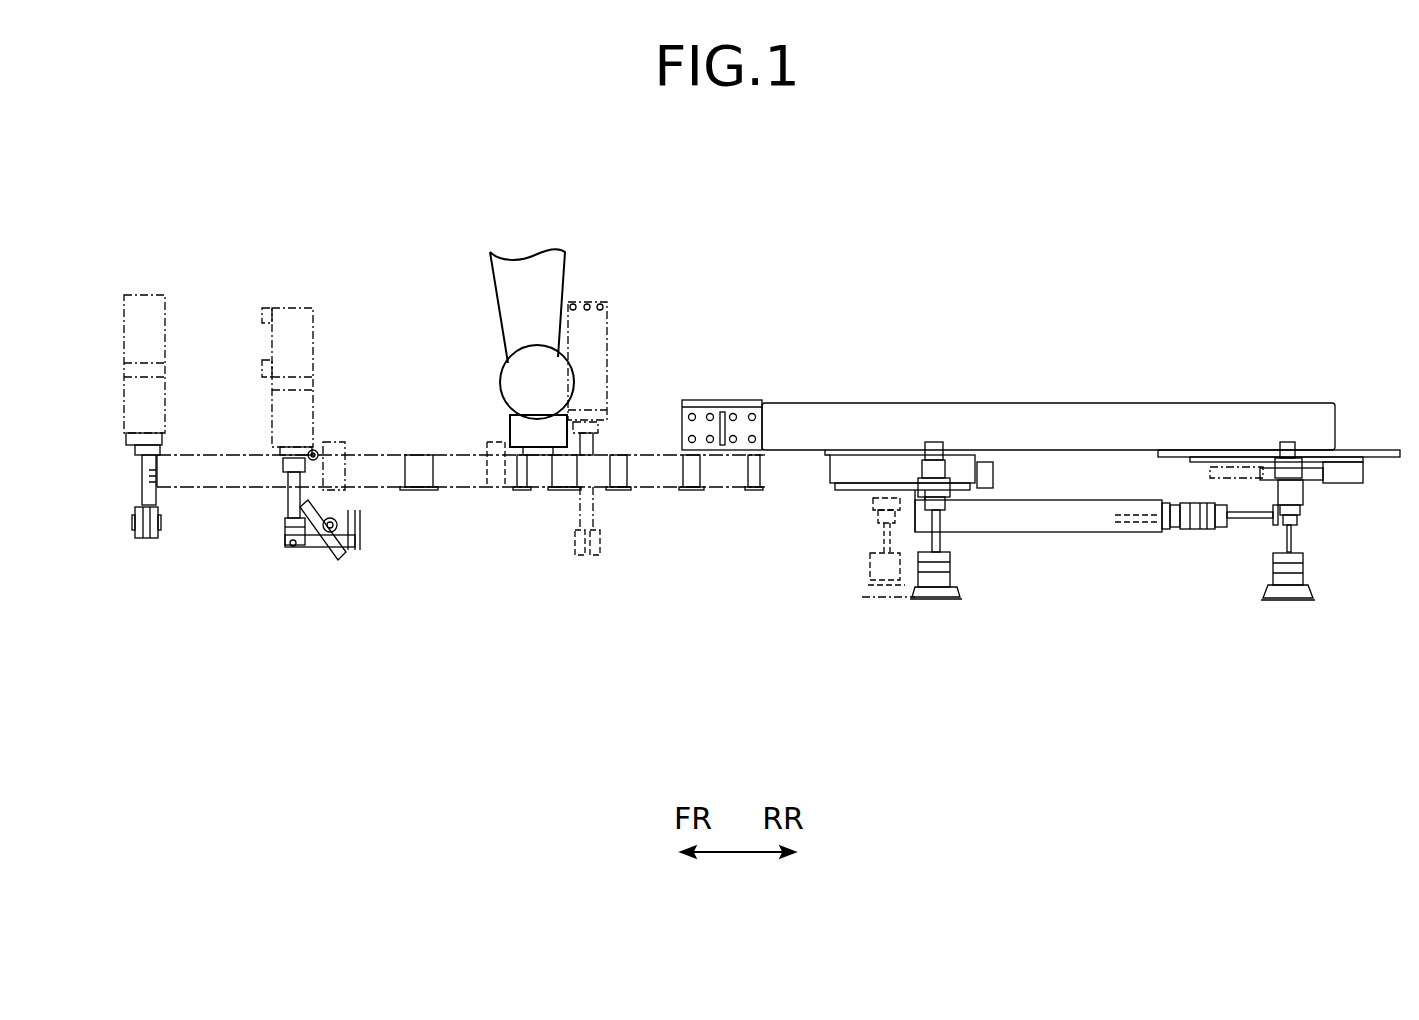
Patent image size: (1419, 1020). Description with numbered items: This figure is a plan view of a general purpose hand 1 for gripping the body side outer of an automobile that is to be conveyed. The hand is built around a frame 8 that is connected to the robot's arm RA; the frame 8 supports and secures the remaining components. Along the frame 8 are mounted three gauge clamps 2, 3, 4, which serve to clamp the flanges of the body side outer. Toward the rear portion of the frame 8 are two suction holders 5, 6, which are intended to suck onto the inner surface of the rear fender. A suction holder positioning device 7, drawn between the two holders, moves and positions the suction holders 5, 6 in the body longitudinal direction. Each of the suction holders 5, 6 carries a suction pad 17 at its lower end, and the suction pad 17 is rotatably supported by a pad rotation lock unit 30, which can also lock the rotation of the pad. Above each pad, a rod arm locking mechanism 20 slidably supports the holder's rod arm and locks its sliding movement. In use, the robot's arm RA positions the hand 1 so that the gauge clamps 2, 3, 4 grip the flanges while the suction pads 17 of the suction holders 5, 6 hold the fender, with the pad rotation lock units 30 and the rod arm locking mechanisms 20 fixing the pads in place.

The general purpose hand 1 is at (785, 335).
The gauge clamp 2 is at (140, 575).
The gauge clamp 3 is at (585, 575).
The gauge clamp 4 is at (313, 575).
The suction holder 5 is at (928, 617).
The suction holder 6 is at (1288, 617).
The suction holder positioning device 7 is at (1135, 556).
The frame 8 is at (445, 468).
The suction pad 17 is at (958, 592).
The rod arm locking mechanism 20 is at (935, 485).
The pad rotation lock unit 30 is at (940, 568).
The robot's arm RA is at (538, 263).